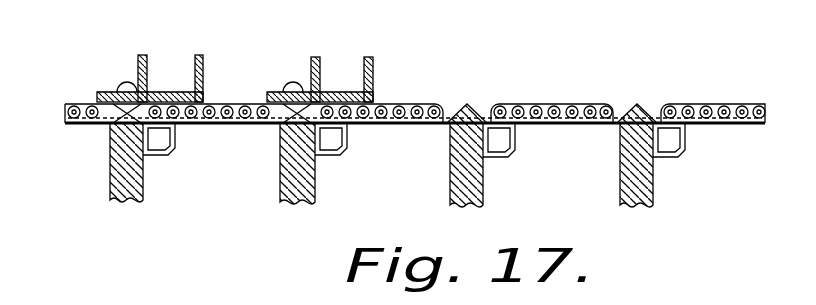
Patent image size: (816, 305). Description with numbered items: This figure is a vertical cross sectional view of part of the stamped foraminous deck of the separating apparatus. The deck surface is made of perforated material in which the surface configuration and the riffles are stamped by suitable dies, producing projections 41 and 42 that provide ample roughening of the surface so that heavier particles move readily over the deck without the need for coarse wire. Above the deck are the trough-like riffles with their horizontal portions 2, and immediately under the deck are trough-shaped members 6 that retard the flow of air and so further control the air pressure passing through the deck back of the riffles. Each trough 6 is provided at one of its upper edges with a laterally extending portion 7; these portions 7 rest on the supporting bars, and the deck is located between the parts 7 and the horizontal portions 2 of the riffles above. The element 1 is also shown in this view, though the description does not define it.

The support plate 1 is at (150, 101).
The horizontal portions of the trough-like riffles 2 is at (206, 62).
The trough-shaped member 6 is at (177, 141).
The laterally extending portion 7 is at (133, 125).
The projection 41 is at (126, 83).
The projection 42 is at (78, 103).